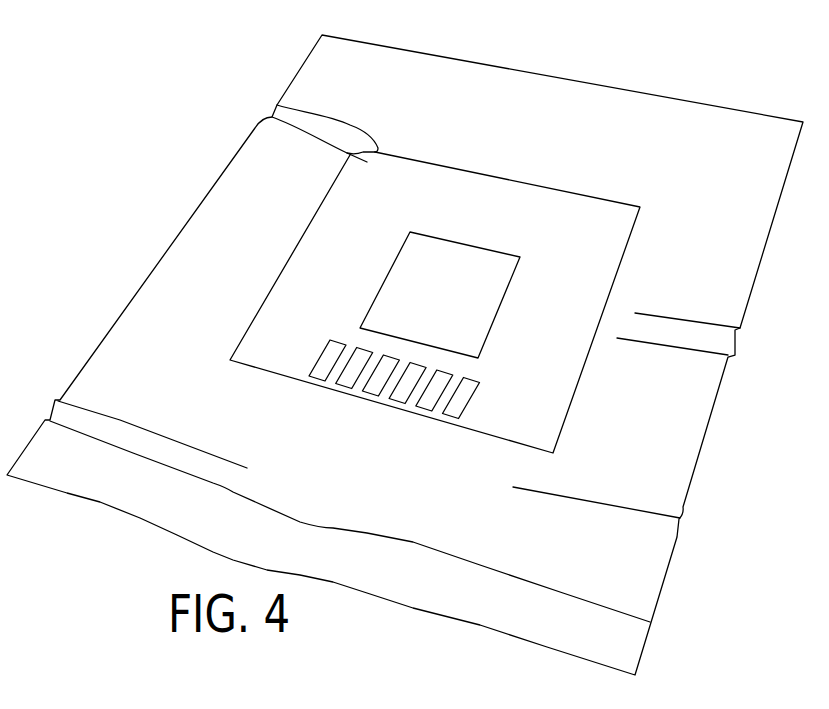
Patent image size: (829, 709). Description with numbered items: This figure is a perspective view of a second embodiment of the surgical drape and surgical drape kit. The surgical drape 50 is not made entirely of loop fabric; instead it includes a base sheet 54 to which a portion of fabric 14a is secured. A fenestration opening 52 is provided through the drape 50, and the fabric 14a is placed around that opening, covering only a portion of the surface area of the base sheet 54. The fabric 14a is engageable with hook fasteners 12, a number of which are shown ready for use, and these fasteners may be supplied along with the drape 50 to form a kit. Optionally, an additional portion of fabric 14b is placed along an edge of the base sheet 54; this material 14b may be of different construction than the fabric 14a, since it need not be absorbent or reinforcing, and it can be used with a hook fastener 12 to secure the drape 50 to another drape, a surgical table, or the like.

The surgical drape 50 is at (138, 238).
The portion of fabric 14a is at (593, 277).
The additional portion of fabric 14b is at (625, 640).
The fenestration opening 52 is at (460, 308).
The hook fasteners 12 is at (457, 417).
The base sheet 54 is at (675, 437).